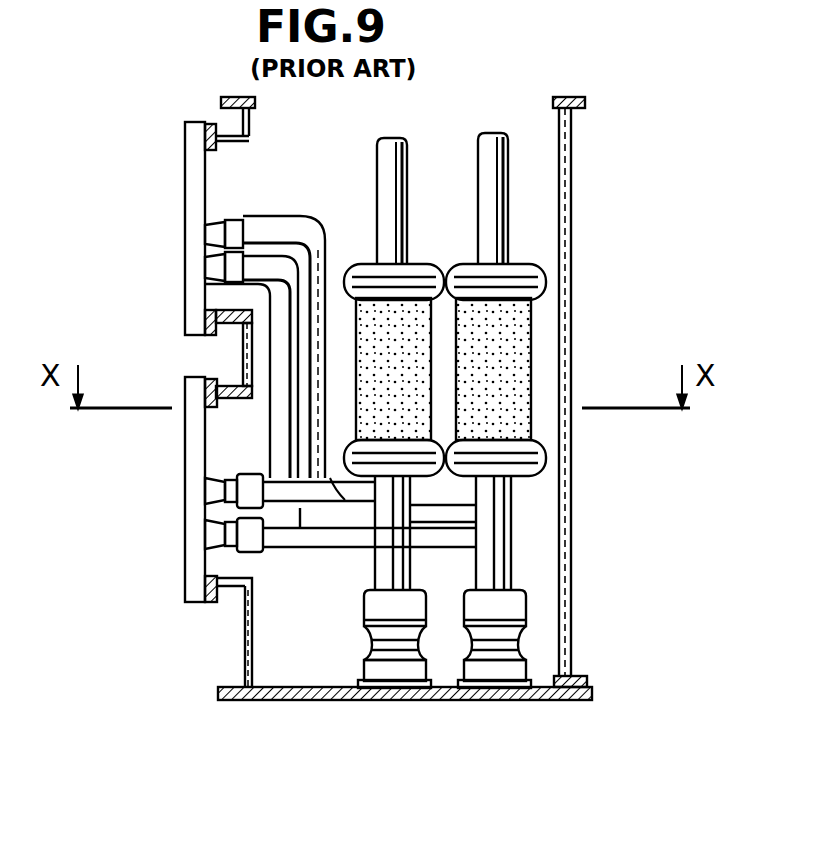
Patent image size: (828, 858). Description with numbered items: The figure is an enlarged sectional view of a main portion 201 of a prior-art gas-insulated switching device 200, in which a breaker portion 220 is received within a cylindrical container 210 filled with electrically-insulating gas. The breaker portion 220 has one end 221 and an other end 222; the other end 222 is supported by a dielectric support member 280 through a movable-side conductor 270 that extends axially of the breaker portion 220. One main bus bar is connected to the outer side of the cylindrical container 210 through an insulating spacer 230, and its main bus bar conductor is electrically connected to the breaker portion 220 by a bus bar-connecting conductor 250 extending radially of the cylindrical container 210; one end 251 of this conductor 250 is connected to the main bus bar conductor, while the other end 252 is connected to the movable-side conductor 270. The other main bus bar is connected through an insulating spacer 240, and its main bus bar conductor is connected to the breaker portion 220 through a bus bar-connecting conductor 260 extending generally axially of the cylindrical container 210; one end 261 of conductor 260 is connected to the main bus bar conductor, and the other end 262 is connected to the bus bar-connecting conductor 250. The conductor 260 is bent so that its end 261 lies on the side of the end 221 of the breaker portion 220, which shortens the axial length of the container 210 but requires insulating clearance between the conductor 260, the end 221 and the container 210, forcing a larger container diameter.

The gas-insulated switching device 200 is at (620, 600).
The portion 201 is at (604, 556).
The cylindrical container 210 is at (572, 240).
The breaker portion 220 is at (510, 352).
The one end 221 is at (546, 284).
The other end 222 is at (548, 455).
The insulating spacer 230 is at (166, 531).
The insulating spacer 240 is at (196, 248).
The bus bar-connecting conductor 250 is at (288, 548).
The one end 251 is at (288, 482).
The other end 252 is at (358, 492).
The bus bar-connecting conductor 260 is at (322, 272).
The one end 261 is at (292, 225).
The other end 262 is at (300, 482).
The movable-side conductor 270 is at (512, 505).
The dielectric support member 280 is at (526, 640).